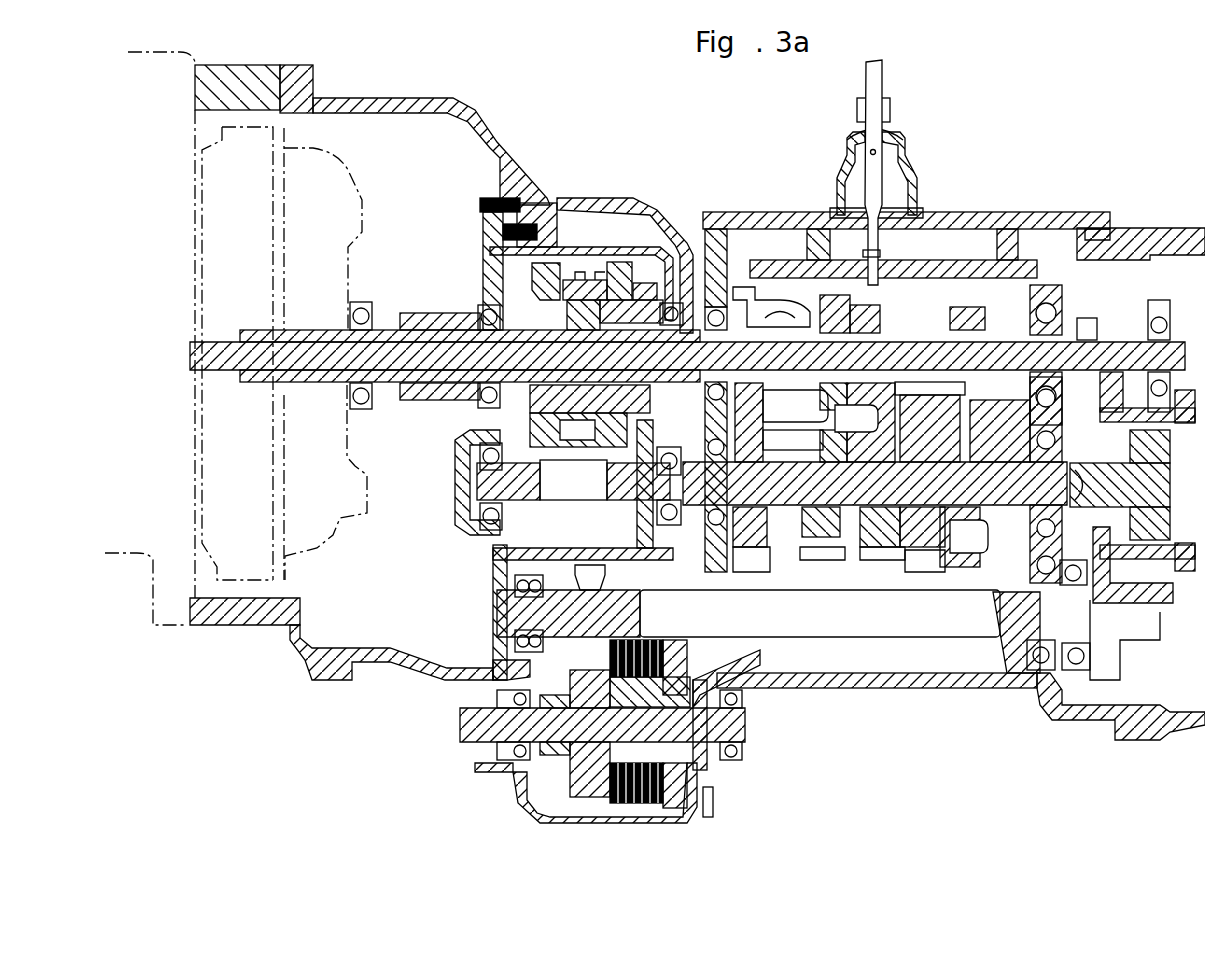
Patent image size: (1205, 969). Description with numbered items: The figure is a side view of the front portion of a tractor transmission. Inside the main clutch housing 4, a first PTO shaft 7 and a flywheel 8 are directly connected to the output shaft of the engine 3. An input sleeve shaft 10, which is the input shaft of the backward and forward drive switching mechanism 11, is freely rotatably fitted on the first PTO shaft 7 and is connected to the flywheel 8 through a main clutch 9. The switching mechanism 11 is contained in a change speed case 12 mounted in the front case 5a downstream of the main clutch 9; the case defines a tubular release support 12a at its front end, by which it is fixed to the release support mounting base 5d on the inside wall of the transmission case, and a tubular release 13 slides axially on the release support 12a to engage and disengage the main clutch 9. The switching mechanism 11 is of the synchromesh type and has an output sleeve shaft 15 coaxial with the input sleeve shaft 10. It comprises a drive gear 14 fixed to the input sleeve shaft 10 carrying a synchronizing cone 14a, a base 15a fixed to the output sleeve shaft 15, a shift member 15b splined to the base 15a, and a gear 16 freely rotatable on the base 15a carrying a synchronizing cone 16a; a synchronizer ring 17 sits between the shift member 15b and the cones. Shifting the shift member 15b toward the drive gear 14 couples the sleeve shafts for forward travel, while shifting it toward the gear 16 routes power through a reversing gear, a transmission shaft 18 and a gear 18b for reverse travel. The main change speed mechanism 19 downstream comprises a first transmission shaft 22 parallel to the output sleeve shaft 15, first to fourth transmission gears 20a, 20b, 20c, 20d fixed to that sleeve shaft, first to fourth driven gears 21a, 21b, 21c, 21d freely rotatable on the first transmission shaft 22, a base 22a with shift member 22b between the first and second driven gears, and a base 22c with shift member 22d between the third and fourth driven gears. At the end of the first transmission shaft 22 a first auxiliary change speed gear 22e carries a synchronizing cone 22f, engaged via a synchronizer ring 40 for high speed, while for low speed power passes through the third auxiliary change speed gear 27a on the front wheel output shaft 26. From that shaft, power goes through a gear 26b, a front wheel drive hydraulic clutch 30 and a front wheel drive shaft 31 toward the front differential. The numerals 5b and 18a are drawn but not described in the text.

The engine 3 is at (178, 613).
The main clutch housing 4 is at (195, 98).
The front case 5a is at (675, 134).
The rear housing flange 5b is at (1192, 240).
The release support mounting base 5d is at (497, 172).
The first PTO shaft 7 is at (315, 355).
The flywheel 8 is at (240, 128).
The main clutch 9 is at (325, 160).
The input sleeve shaft 10 is at (340, 380).
The backward and forward drive switching mechanism 11 is at (614, 227).
The change speed case 12 is at (600, 215).
The release support 12a is at (450, 395).
The release 13 is at (382, 300).
The drive gear 14 is at (485, 238).
The synchronizing cone 14a is at (548, 245).
The output sleeve shaft 15 is at (690, 333).
The base 15a is at (480, 292).
The shift member 15b is at (575, 443).
The gear 16 is at (660, 300).
The synchronizing cone 16a is at (640, 268).
The synchronizer ring 17 is at (578, 300).
The transmission shaft 18 is at (455, 493).
The bearing housing support 18a is at (483, 548).
The gear 18b is at (635, 515).
The main change speed mechanism 19 is at (940, 288).
The first transmission gear 20a is at (973, 307).
The second transmission gear 20b is at (882, 310).
The third transmission gear 20c is at (822, 302).
The fourth transmission gear 20d is at (745, 285).
The first driven gear 21a is at (957, 537).
The second driven gear 21b is at (867, 557).
The third driven gear 21c is at (835, 553).
The fourth driven gear 21d is at (745, 552).
The first transmission shaft 22 is at (1022, 490).
The base 22a is at (923, 507).
The shift member 22b is at (915, 555).
The base 22c is at (797, 507).
The shift member 22d is at (778, 560).
The first auxiliary change speed gear 22e is at (1120, 540).
The synchronizing cone 22f is at (1122, 345).
The front wheel output shaft 26 is at (980, 637).
The gear 26b is at (607, 570).
The third auxiliary change speed gear 27a is at (1113, 698).
The front wheel drive hydraulic clutch 30 is at (594, 805).
The front wheel drive shaft 31 is at (547, 750).
The synchronizer ring 40 is at (1165, 585).